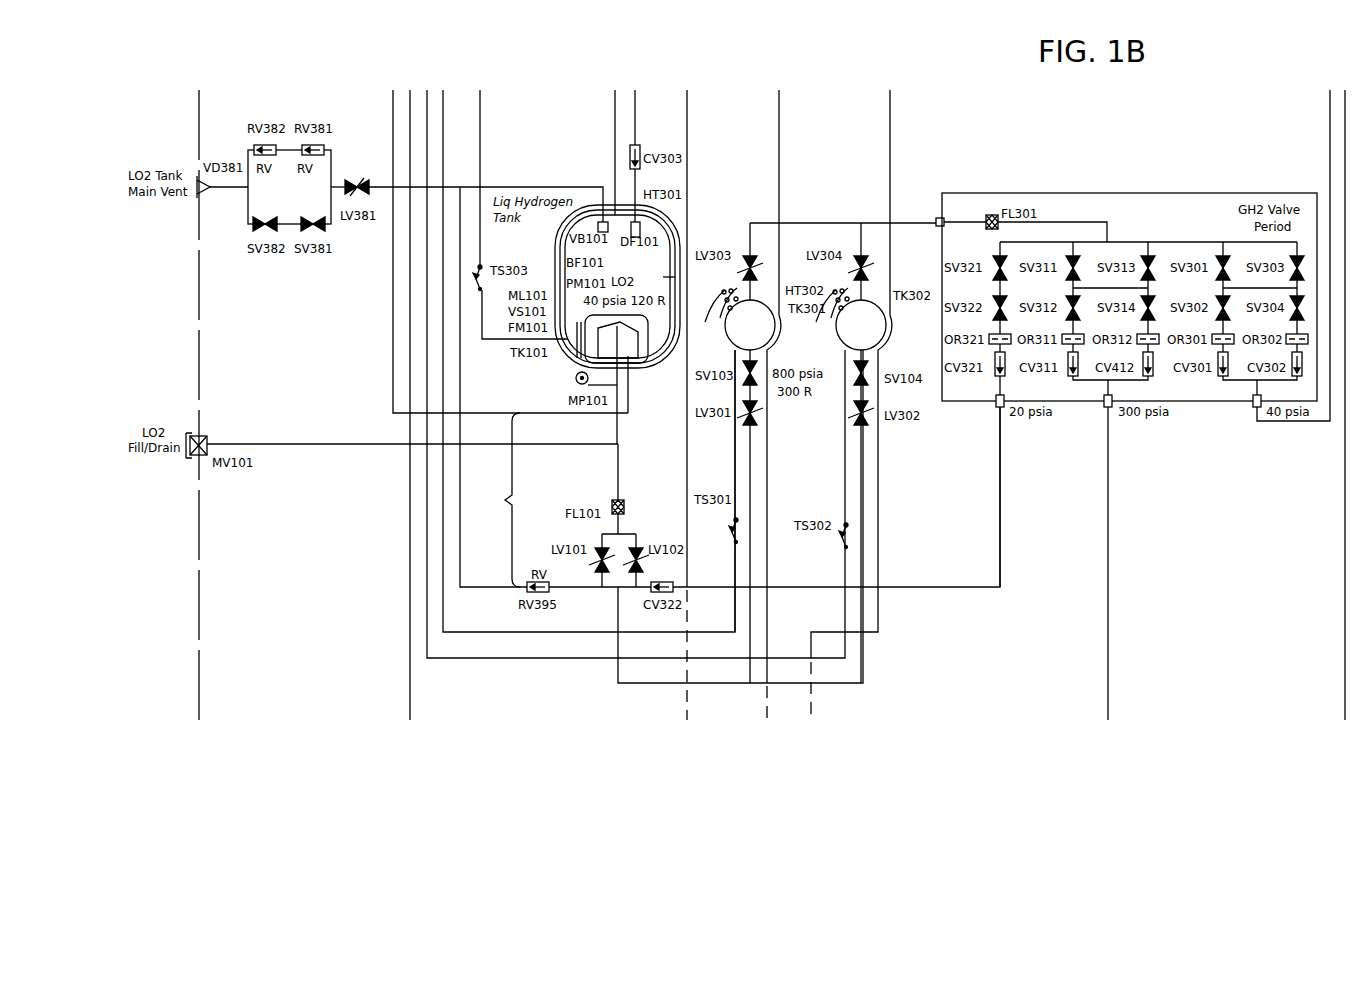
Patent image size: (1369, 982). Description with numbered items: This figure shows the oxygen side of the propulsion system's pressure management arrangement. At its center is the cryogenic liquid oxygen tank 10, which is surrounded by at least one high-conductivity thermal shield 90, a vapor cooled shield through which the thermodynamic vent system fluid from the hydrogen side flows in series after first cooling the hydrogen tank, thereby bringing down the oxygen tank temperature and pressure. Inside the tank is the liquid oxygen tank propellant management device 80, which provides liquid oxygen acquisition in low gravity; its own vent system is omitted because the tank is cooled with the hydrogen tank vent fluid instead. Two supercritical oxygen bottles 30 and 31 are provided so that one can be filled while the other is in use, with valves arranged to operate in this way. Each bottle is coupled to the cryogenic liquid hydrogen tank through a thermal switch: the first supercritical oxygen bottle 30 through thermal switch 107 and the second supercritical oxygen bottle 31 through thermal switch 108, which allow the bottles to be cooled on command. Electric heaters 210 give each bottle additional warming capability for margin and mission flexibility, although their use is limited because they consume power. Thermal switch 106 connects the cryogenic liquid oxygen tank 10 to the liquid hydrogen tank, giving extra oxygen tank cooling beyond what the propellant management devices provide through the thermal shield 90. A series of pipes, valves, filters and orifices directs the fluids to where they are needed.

The cryogenic liquid oxygen tank 10 is at (578, 252).
The high-conductivity thermal shield 90 is at (563, 357).
The thermal switch 106 is at (477, 278).
The thermal switch 107 is at (733, 535).
The thermal switch 108 is at (844, 540).
The supercritical oxygen bottle 30 is at (776, 332).
The supercritical oxygen bottle 31 is at (887, 332).
The electric heater 210 is at (715, 487).
The liquid oxygen tank propellant management device 80 is at (669, 516).